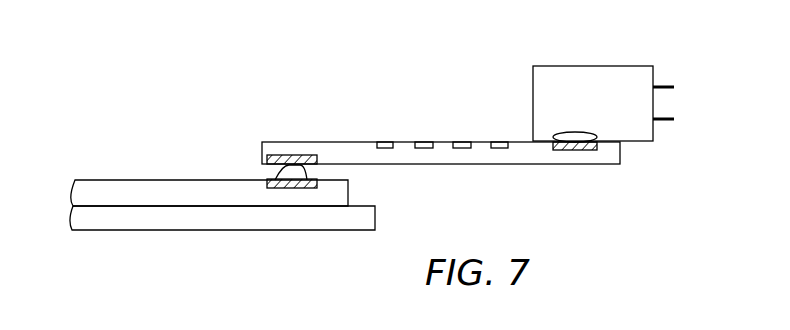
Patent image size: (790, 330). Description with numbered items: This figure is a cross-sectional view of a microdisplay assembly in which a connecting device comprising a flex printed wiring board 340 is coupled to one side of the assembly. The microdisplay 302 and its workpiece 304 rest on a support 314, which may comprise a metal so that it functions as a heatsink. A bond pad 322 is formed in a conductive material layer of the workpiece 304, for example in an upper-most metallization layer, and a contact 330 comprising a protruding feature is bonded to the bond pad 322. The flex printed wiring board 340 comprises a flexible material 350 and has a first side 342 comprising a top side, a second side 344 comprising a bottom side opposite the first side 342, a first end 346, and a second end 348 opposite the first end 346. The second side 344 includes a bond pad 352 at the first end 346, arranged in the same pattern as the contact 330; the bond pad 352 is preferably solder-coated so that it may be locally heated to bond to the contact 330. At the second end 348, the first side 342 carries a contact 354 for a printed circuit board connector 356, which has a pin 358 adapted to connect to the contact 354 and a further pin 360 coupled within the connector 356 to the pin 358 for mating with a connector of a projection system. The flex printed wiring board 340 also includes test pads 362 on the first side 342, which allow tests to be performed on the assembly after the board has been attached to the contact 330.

The microdisplay 302 is at (265, 214).
The workpiece 304 is at (152, 185).
The support 314 is at (135, 222).
The bond pad 322 is at (296, 184).
The contact 330 is at (287, 173).
The flex printed wiring board 340 is at (396, 106).
The first side 342 is at (482, 137).
The second side 344 is at (428, 168).
The first end 346 is at (258, 138).
The second end 348 is at (610, 136).
The flexible material 350 is at (515, 154).
The bond pad 352 is at (290, 162).
The contact 354 is at (580, 150).
The printed circuit board connector 356 is at (592, 72).
The pin 358 is at (575, 135).
The pin 360 is at (663, 125).
The test pad 362 is at (423, 140).